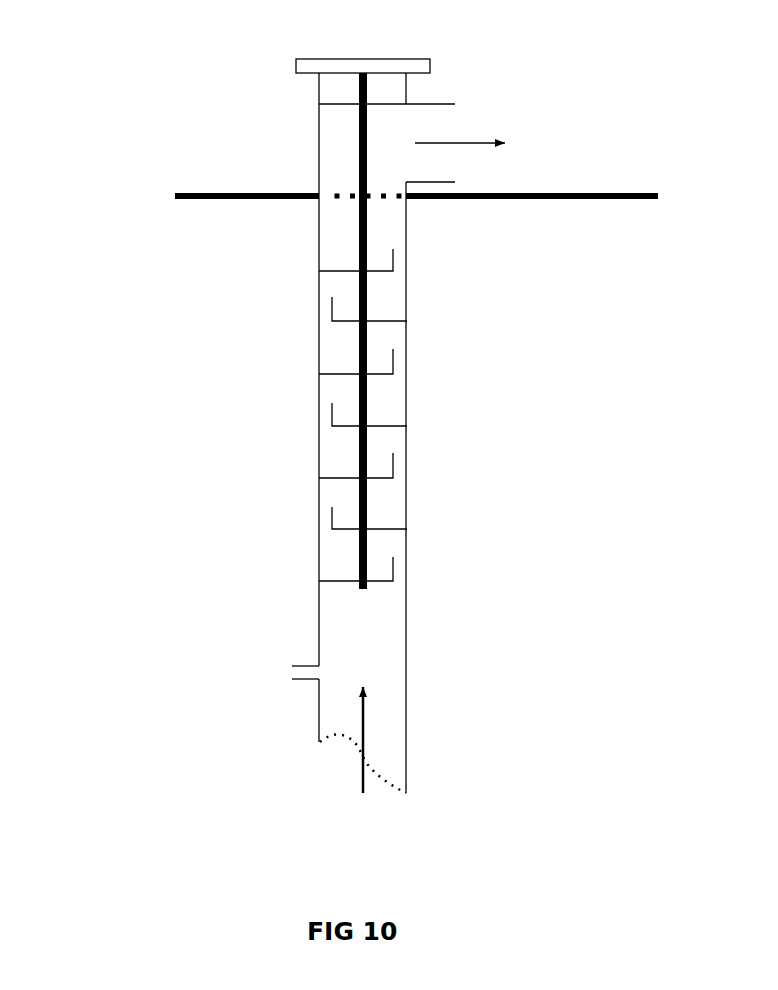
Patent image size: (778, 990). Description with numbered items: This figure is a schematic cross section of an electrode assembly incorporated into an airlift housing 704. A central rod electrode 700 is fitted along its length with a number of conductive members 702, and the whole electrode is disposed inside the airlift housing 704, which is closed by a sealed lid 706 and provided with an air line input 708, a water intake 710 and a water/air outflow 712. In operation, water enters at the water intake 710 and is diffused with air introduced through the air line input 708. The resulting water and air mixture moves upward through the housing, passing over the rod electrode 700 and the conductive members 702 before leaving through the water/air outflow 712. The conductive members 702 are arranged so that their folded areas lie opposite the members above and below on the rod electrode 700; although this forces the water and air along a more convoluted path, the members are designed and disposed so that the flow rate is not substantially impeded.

The rod electrode 700 is at (370, 236).
The conductive members 702 is at (325, 573).
The airlift housing 704 is at (406, 628).
The sealed lid 706 is at (292, 67).
The air line input 708 is at (285, 668).
The water intake 710 is at (362, 764).
The water/air outflow 712 is at (416, 185).